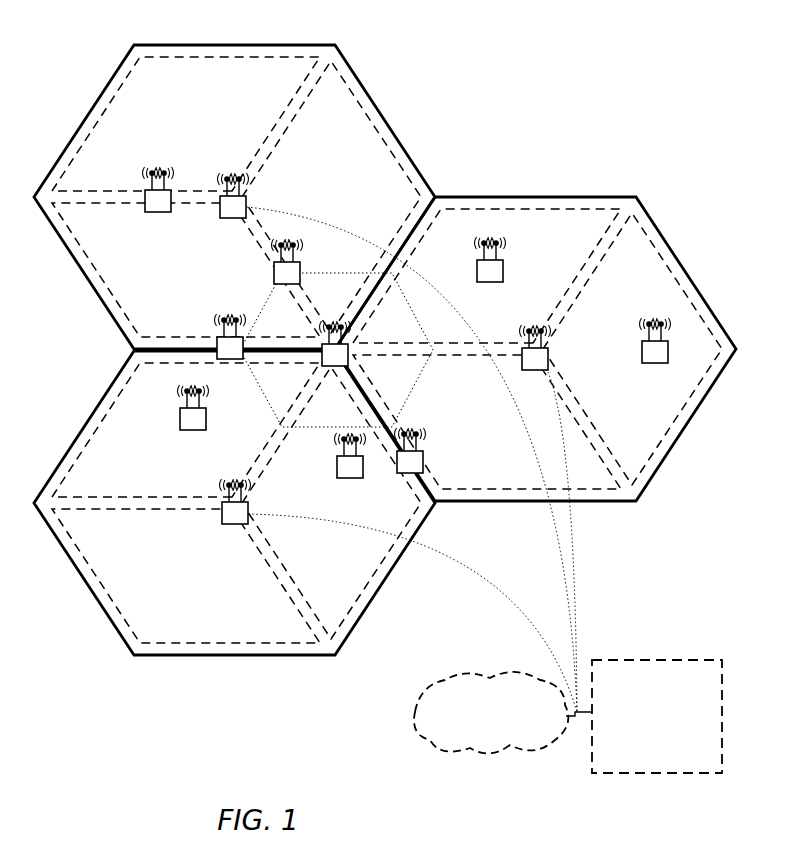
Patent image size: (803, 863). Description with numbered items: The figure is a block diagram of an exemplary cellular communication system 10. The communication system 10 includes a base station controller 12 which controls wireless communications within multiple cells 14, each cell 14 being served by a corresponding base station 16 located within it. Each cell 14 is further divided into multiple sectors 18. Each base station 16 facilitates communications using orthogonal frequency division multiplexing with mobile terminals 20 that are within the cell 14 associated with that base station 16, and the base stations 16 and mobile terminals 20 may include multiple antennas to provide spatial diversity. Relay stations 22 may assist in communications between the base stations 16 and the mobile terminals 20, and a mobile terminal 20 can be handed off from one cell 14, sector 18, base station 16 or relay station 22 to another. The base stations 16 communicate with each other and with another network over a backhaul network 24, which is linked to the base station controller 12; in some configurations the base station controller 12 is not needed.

The communication system 10 is at (641, 37).
The base station controller 12 is at (649, 746).
The cell 14 is at (251, 45).
The base station 16 is at (237, 524).
The sector 18 is at (343, 603).
The mobile terminal 20 is at (423, 462).
The relay station 22 is at (337, 470).
The backhaul network 24 is at (482, 729).